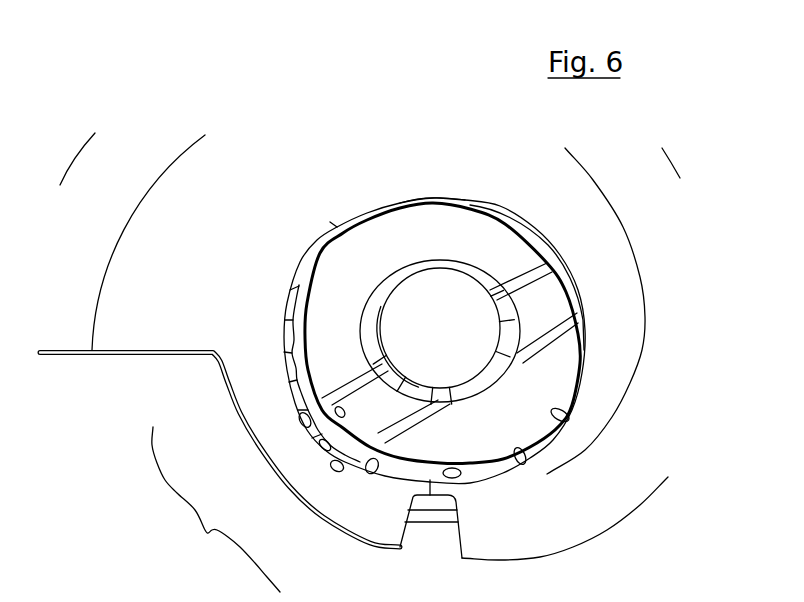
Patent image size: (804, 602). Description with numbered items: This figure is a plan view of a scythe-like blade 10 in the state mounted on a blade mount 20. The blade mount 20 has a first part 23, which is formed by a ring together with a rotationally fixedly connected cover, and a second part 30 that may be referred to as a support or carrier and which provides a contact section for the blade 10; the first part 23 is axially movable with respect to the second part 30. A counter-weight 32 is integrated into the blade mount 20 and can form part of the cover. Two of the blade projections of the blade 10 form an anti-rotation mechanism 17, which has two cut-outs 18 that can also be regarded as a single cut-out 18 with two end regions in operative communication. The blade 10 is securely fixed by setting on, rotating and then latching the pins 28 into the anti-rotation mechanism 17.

The scythe-like blade 10 is at (584, 203).
The anti-rotation mechanism 17 is at (216, 509).
The cut-outs 18 is at (302, 425).
The blade mount 20 is at (433, 341).
The first part 23 is at (333, 287).
The pins 28 is at (335, 410).
The second part 30 is at (437, 505).
The counter-weight 32 is at (552, 372).